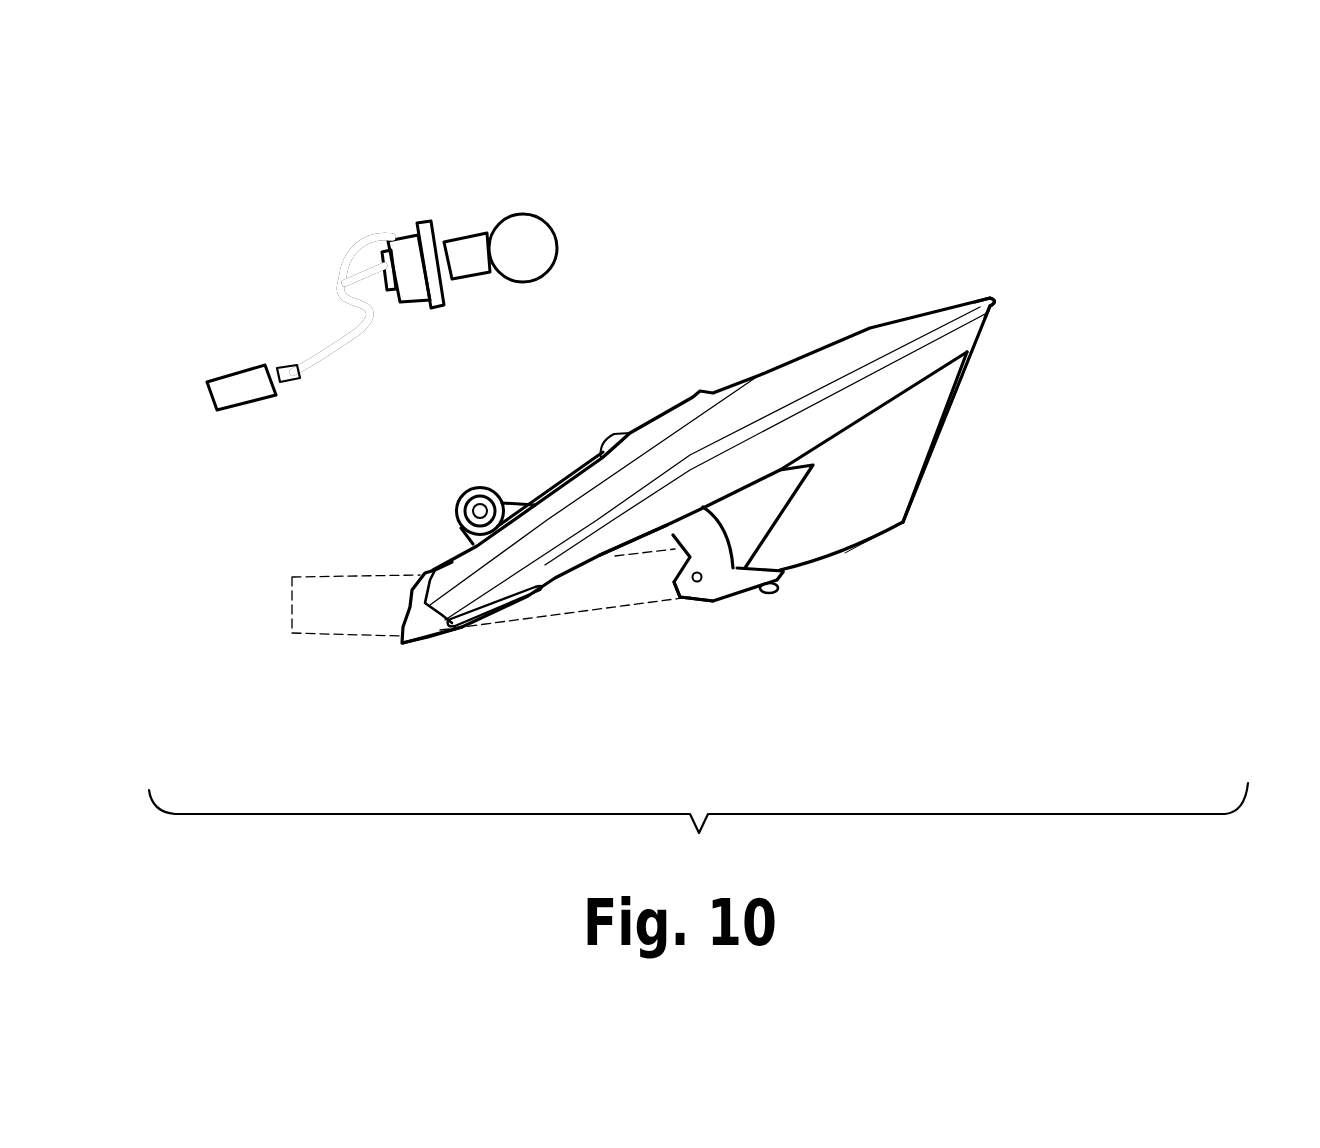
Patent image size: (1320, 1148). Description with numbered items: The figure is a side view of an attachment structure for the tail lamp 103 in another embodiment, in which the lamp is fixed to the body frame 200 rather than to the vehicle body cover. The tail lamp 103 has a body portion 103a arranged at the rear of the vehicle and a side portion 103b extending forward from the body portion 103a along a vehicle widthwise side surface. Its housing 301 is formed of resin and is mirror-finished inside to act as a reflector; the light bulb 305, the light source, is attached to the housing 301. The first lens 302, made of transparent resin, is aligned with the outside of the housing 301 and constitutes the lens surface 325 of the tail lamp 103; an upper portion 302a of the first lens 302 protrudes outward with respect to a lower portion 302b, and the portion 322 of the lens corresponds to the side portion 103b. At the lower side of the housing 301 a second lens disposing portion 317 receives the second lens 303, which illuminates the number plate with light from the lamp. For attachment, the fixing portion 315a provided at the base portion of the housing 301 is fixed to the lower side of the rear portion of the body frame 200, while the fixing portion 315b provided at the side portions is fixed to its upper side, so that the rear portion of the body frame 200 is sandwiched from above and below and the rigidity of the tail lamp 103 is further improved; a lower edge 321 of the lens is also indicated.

The tail lamp 103 is at (843, 204).
The body portion 103a is at (946, 469).
The side portion 103b is at (616, 546).
The body frame 200 is at (330, 640).
The housing 301 is at (426, 645).
The first lens 302 is at (905, 322).
The upper portion 302a is at (992, 314).
The lower portion 302b is at (952, 410).
The second lens 303 is at (782, 582).
The light bulb 305 is at (510, 205).
The fixing portion 315a is at (710, 600).
The fixing portion 315b is at (480, 500).
The second lens disposing portion 317 is at (768, 597).
The lens lower corner 321 is at (908, 520).
The portion corresponding to the side portion 322 is at (575, 506).
The lens surface 325 is at (875, 496).